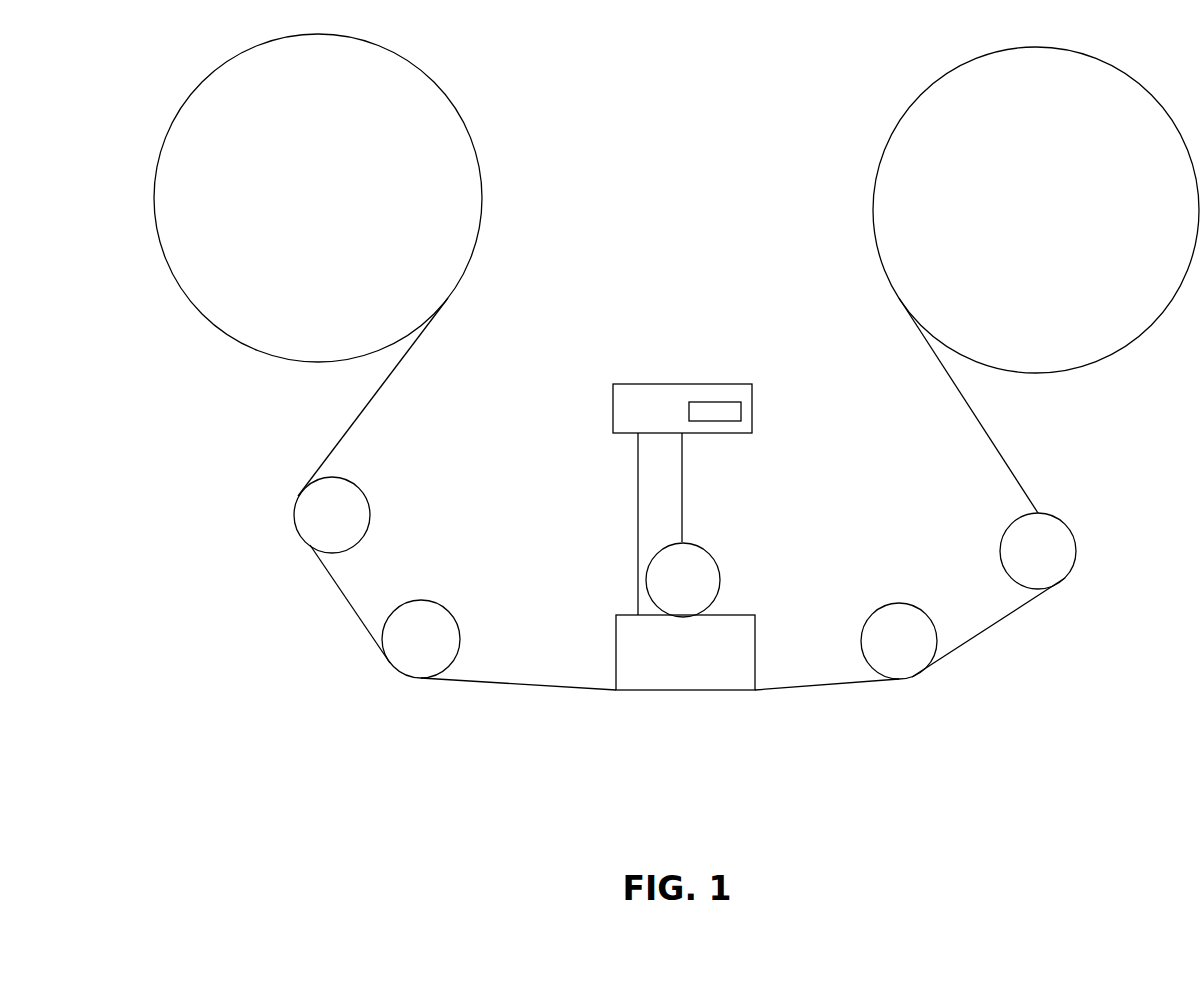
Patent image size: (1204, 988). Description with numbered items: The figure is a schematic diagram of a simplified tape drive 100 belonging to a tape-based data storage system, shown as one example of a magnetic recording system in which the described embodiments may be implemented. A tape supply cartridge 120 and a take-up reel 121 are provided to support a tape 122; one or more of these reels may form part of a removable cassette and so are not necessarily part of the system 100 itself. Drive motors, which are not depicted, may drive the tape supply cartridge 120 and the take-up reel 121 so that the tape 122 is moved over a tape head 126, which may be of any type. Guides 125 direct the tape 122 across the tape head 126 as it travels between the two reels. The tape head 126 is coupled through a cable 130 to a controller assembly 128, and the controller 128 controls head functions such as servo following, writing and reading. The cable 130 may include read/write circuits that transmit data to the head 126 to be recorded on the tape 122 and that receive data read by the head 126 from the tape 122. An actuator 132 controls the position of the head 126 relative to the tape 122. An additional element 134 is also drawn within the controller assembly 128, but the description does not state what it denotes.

The tape drive 100 is at (270, 426).
The tape supply cartridge 120 is at (480, 167).
The take-up reel 121 is at (1138, 338).
The tape 122 is at (522, 687).
The guides 125 is at (420, 600).
The tape head 126 is at (755, 650).
The controller assembly 128 is at (682, 384).
The cable 130 is at (637, 575).
The actuator 132 is at (707, 548).
The sensor 134 is at (726, 402).